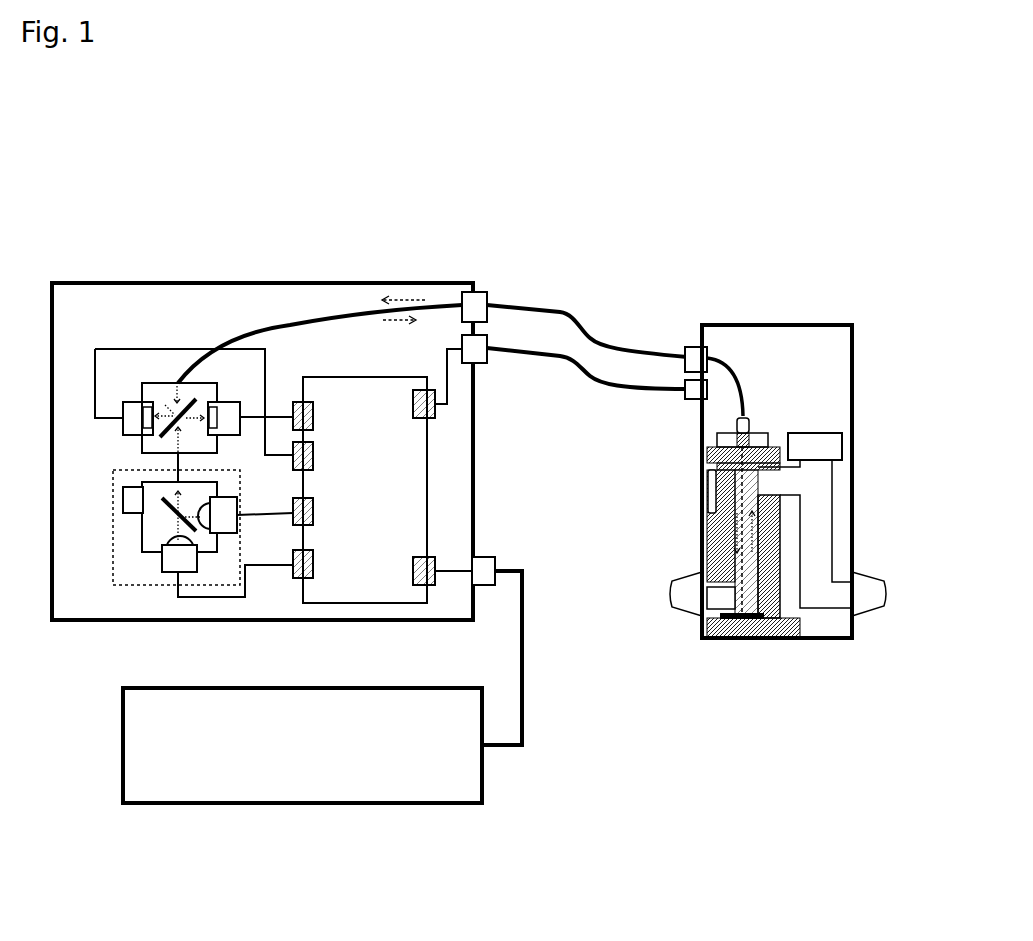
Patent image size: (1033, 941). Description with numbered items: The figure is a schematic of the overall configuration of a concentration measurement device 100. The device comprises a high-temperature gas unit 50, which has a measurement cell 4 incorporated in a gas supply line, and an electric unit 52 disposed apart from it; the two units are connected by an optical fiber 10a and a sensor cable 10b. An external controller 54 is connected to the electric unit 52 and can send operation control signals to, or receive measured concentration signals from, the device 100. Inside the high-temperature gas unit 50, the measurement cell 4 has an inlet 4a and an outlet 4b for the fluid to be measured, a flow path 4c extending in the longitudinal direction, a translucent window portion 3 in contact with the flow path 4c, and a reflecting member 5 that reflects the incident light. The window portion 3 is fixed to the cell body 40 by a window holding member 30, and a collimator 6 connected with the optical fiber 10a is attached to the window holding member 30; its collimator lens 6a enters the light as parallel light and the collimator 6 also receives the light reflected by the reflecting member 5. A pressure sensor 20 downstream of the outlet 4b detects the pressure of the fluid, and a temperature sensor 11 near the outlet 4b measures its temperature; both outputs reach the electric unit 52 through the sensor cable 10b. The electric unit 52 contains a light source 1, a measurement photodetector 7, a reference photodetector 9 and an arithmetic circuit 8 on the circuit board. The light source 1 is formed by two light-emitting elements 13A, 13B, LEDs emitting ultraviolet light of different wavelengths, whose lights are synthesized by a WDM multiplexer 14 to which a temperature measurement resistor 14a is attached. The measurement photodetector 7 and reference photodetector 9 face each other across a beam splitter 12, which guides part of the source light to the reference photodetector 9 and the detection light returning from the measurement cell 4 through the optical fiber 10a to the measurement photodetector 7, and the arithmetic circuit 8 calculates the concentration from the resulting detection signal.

The concentration measurement device 100 is at (670, 231).
The electric unit 52 is at (214, 283).
The external controller 54 is at (330, 804).
The light source 1 is at (146, 590).
The measurement photodetector 7 is at (125, 435).
The beam splitter 12 is at (145, 389).
The reference photodetector 9 is at (228, 435).
The multiplexer 14 is at (160, 522).
The temperature measurement resistor 14a is at (123, 499).
The light-emitting element 13A is at (180, 553).
The light-emitting element 13B is at (223, 522).
The arithmetic circuit 8 is at (388, 487).
The optical fiber 10a is at (318, 321).
The sensor cable 10b is at (528, 357).
The high-temperature gas unit 50 is at (792, 325).
The collimator 6 is at (748, 423).
The collimator lens 6a is at (757, 429).
The pressure sensor 20 is at (818, 443).
The window holding member 30 is at (715, 442).
The window portion 3 is at (712, 466).
The temperature sensor 11 is at (708, 501).
The cell body 40 is at (706, 540).
The flow path 4c is at (705, 558).
The measurement cell 4 is at (780, 590).
The outlet 4b is at (778, 481).
The inlet 4a is at (716, 597).
The reflecting member 5 is at (742, 638).